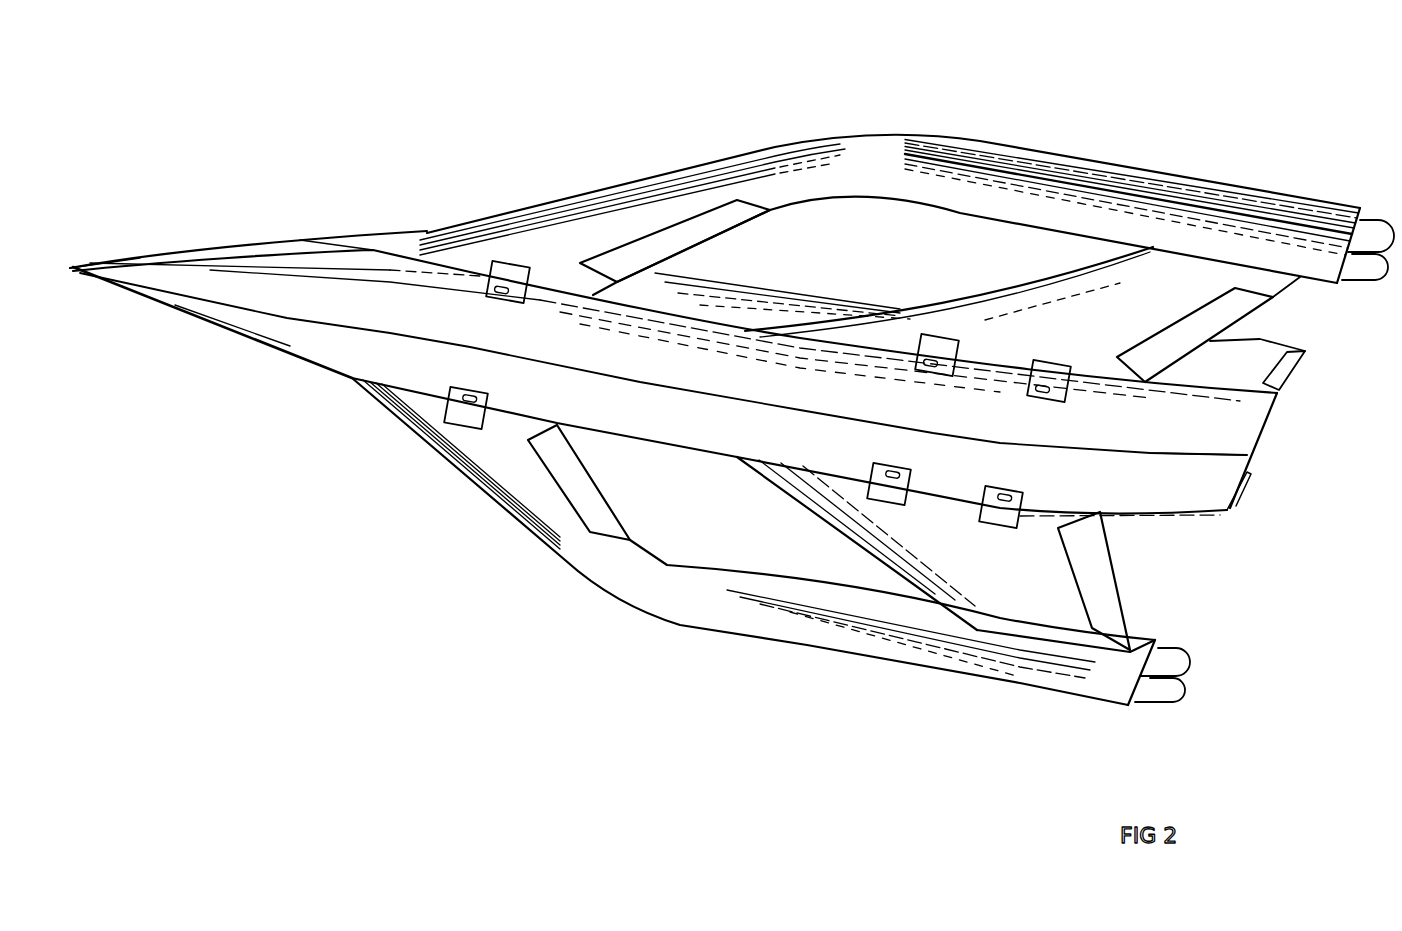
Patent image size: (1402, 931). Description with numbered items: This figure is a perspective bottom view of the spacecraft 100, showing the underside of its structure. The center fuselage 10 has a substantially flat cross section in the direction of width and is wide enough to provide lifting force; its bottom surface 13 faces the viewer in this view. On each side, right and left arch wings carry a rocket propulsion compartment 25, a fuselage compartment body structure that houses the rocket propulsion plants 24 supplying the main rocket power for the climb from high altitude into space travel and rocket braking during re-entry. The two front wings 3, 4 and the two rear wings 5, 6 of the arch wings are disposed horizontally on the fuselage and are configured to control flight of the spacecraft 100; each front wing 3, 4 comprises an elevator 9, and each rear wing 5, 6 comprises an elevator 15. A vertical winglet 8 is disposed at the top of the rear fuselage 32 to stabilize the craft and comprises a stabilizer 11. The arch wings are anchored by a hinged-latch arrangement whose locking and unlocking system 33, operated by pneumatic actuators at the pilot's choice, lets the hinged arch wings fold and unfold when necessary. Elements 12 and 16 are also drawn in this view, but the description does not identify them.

The spacecraft 100 is at (705, 53).
The front wing 3 is at (497, 463).
The front wing 4 is at (642, 216).
The rear wing 5 is at (1038, 557).
The rear wing 6 is at (1160, 273).
The vertical winglet 8 is at (1250, 368).
The elevator 9 is at (690, 233).
The fuselage 10 is at (323, 355).
The stabilizer 11 is at (1290, 363).
The deck 12 is at (363, 238).
The bottom surface 13 is at (797, 458).
The elevator 15 is at (1242, 297).
The bow 16 is at (123, 258).
The rocket propulsion plants 24 is at (1367, 270).
The rocket propulsion compartment 25 is at (1221, 202).
The rear fuselage 32 is at (1187, 482).
The locking and unlocking system 33 is at (510, 280).